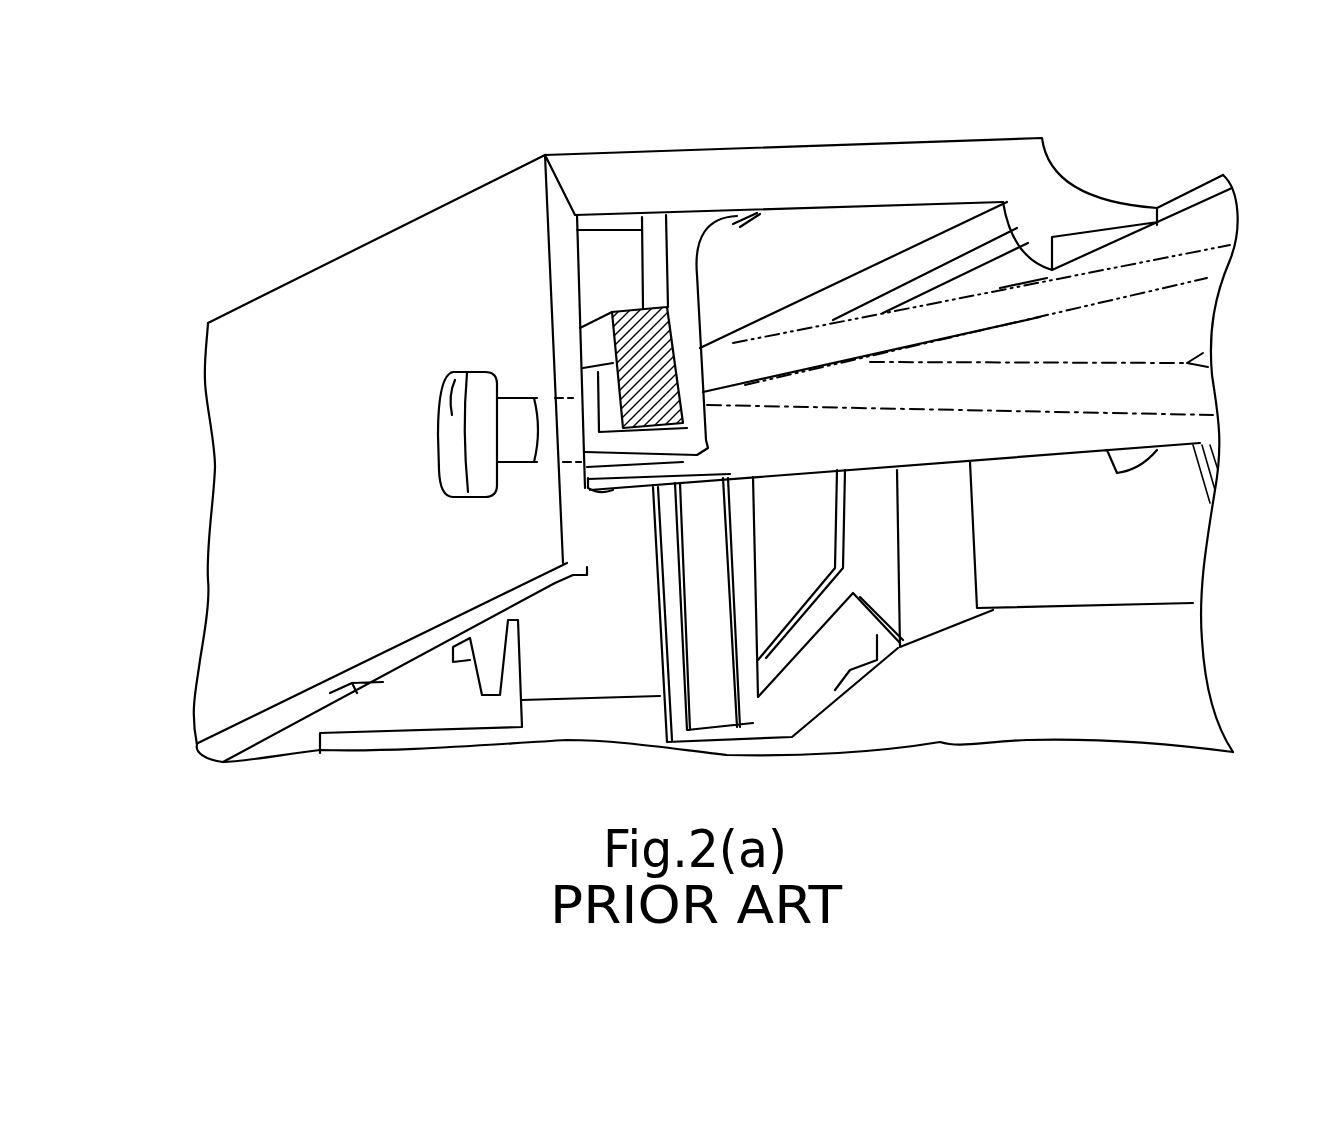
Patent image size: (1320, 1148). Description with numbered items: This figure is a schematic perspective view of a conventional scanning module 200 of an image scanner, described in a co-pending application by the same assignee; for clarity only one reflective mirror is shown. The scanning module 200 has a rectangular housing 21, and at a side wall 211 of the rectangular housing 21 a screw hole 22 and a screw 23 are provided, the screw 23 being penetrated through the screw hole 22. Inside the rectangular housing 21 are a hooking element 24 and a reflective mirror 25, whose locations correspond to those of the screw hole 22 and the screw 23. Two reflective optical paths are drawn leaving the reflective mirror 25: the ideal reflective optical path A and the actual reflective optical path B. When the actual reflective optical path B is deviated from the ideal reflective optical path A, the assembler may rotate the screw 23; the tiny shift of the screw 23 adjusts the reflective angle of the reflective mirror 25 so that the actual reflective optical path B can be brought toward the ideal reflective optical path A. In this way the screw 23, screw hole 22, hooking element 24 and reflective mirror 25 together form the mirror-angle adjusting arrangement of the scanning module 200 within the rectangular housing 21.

The scanning module 200 is at (1175, 128).
The rectangular housing 21 is at (922, 158).
The side wall 211 is at (233, 627).
The screw hole 22 is at (570, 425).
The screw 23 is at (453, 413).
The hooking element 24 is at (689, 233).
The reflective mirror 25 is at (642, 347).
The ideal reflective optical path A is at (1192, 390).
The actual reflective optical path B is at (1203, 262).